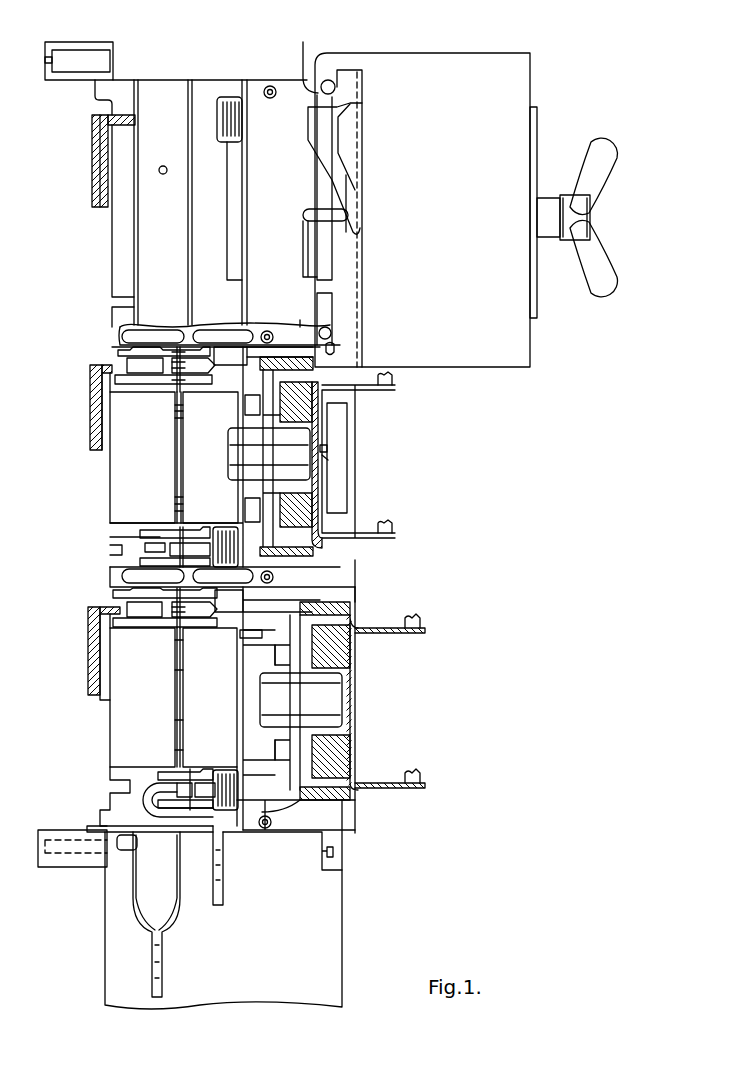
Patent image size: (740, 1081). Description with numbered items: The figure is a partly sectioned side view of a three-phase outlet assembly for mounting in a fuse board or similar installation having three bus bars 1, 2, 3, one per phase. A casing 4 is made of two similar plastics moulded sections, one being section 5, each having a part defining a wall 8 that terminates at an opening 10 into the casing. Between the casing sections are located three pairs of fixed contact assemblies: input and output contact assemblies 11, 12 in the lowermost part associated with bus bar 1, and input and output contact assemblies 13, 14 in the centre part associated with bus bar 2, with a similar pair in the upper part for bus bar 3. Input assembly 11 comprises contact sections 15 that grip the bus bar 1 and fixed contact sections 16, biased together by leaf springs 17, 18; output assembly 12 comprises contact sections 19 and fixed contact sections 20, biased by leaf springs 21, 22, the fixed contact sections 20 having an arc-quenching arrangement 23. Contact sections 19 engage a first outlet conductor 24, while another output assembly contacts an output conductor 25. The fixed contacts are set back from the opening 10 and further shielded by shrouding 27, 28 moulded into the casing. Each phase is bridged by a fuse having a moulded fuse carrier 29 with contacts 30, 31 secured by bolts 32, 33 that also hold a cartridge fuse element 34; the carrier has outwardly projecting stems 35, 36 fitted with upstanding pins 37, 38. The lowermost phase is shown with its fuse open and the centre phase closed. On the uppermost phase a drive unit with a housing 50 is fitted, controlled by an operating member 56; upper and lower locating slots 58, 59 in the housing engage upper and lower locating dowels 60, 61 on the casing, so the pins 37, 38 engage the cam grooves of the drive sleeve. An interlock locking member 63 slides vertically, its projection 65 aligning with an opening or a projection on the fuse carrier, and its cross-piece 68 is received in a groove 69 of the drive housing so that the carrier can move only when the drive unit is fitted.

The bus bar 1 is at (88, 621).
The bus bar 2 is at (90, 398).
The bus bar 3 is at (92, 160).
The casing 4 is at (105, 494).
The casing section 5 is at (120, 463).
The wall 8 is at (348, 426).
The opening 10 is at (360, 494).
The input contact assembly 11 is at (108, 583).
The output contact assembly 12 is at (140, 784).
The input contact assembly 13 is at (136, 356).
The output contact assembly 14 is at (150, 530).
The contact sections 15 is at (110, 626).
The fixed contact sections 16 is at (206, 630).
The leaf spring 17 is at (120, 597).
The leaf spring 18 is at (155, 630).
The contact sections 19 is at (142, 790).
The fixed contact sections 20 is at (176, 774).
The leaf spring 21 is at (170, 783).
The leaf spring 22 is at (192, 815).
The arc-quenching arrangement 23 is at (219, 775).
The first outlet conductor 24 is at (220, 851).
The output conductor 25 is at (160, 943).
The shrouding 27 is at (248, 622).
The shrouding 28 is at (250, 813).
The fuse carrier 29 is at (342, 753).
The contact 30 is at (255, 616).
The contact 31 is at (268, 817).
The bolt 32 is at (275, 649).
The bolt 33 is at (275, 751).
The cartridge fuse element 34 is at (272, 696).
The stem 35 is at (388, 791).
The stem 36 is at (386, 635).
The pin 37 is at (420, 770).
The pin 38 is at (418, 618).
The housing 50 is at (505, 72).
The operating member 56 is at (603, 150).
The upper locating slot 58 is at (304, 56).
The lower locating slot 59 is at (335, 350).
The upper locating dowel 60 is at (332, 80).
The lower locating dowel 61 is at (331, 333).
The locking member 63 is at (330, 457).
The projection 65 is at (330, 448).
The cross-piece 68 is at (306, 215).
The groove 69 is at (352, 230).